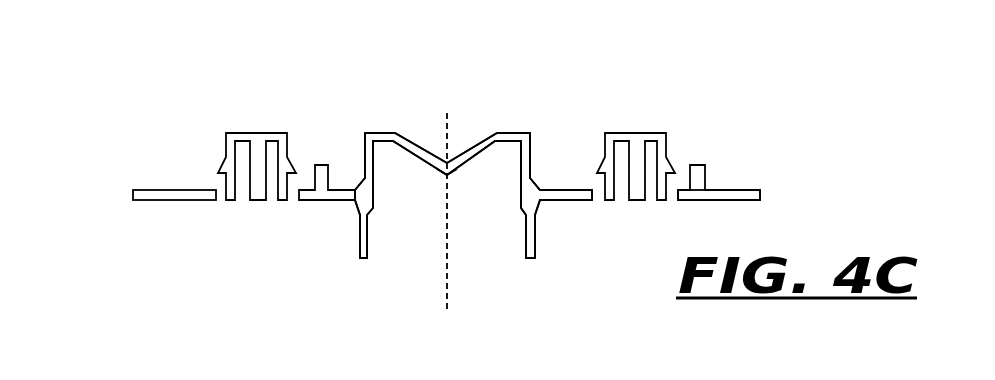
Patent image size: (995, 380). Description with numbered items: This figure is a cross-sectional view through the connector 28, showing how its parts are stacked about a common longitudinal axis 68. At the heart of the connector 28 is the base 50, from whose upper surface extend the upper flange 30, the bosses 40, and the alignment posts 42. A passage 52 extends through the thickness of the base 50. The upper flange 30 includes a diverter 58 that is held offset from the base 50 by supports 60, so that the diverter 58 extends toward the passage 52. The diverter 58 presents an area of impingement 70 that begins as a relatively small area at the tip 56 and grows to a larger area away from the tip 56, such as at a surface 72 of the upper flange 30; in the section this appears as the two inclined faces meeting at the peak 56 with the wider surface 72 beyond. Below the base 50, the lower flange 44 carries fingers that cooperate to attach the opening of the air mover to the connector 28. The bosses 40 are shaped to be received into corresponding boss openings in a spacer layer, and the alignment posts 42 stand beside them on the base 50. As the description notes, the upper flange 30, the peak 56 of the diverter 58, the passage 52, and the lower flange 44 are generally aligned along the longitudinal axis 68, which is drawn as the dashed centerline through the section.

The connector 28 is at (359, 76).
The upper flange 30 is at (393, 132).
The bosses 40 is at (242, 132).
The alignment posts 42 is at (322, 165).
The lower flange 44 is at (532, 236).
The base 50 is at (740, 190).
The passage 52 is at (377, 177).
The tip 56 is at (447, 175).
The diverter 58 is at (478, 145).
The supports 60 is at (538, 158).
The longitudinal axis 68 is at (450, 290).
The area of impingement 70 is at (425, 150).
The surface 72 is at (381, 143).